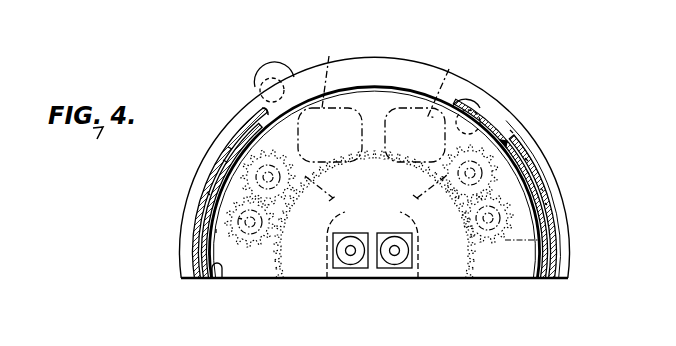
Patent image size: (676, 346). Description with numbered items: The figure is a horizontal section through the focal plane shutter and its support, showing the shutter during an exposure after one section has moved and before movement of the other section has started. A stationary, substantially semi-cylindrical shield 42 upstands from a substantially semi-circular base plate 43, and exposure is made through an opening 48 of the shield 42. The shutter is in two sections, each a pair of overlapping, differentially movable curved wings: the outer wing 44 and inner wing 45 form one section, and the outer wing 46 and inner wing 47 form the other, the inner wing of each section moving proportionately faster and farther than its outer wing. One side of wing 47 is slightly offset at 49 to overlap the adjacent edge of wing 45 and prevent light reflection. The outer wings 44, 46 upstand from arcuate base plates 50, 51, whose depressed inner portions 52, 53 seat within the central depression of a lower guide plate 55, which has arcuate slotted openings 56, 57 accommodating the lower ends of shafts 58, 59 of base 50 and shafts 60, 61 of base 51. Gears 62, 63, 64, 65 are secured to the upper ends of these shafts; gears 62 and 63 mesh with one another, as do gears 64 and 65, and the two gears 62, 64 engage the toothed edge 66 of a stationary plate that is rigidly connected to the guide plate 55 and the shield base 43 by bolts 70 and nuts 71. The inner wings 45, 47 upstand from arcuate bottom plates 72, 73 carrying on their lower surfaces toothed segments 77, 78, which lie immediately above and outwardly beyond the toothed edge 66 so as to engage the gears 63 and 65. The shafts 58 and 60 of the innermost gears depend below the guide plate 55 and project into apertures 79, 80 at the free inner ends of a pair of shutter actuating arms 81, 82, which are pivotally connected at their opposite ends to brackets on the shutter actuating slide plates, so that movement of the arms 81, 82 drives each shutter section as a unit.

The shield 42 is at (217, 270).
The base plate 43 is at (449, 267).
The outer wing 44 is at (235, 200).
The inner wing 45 is at (249, 131).
The outer wing 46 is at (553, 230).
The inner wing 47 is at (528, 161).
The opening 48 is at (401, 88).
The offset 49 is at (506, 141).
The arcuate base plate 50 is at (330, 135).
The arcuate base plate 51 is at (415, 135).
The depressed inner portion 52 is at (340, 222).
The depressed inner portion 53 is at (404, 234).
The guide plate 55 is at (566, 268).
The arcuate slotted opening 56 is at (325, 73).
The arcuate slotted opening 57 is at (446, 84).
The shaft 58 is at (238, 218).
The shaft 59 is at (223, 160).
The shaft 60 is at (543, 191).
The shaft 61 is at (529, 174).
The gear 62 is at (207, 192).
The gear 63 is at (228, 147).
The gear 64 is at (558, 242).
The gear 65 is at (513, 133).
The toothed edge 66 is at (374, 228).
The bolt 70 is at (394, 253).
The nut 71 is at (352, 255).
The arcuate bottom plate 72 is at (330, 187).
The arcuate bottom plate 73 is at (407, 188).
The toothed segment 77 is at (260, 213).
The toothed segment 78 is at (485, 252).
The aperture 79 is at (220, 231).
The aperture 80 is at (547, 205).
The shutter actuating arm 81 is at (275, 66).
The shutter actuating arm 82 is at (486, 93).